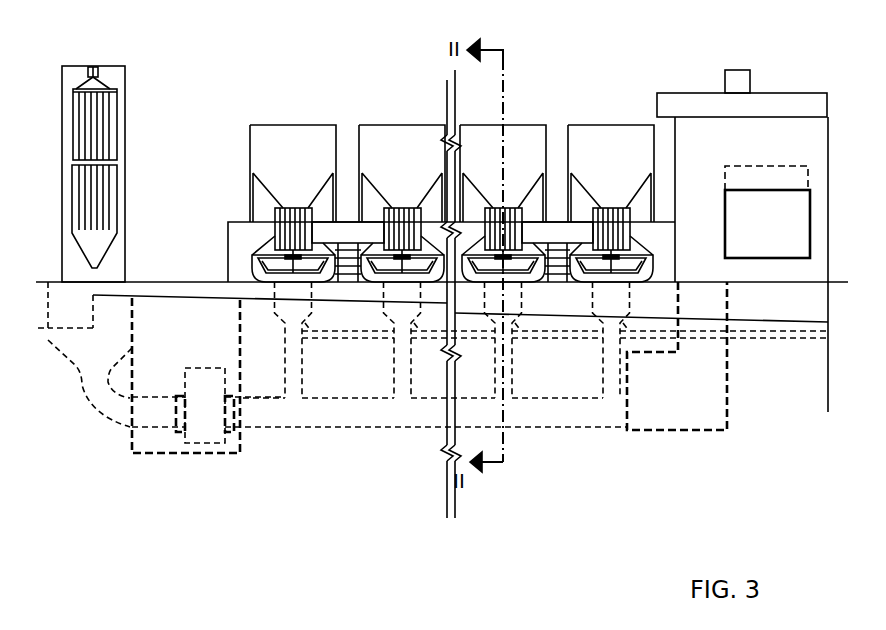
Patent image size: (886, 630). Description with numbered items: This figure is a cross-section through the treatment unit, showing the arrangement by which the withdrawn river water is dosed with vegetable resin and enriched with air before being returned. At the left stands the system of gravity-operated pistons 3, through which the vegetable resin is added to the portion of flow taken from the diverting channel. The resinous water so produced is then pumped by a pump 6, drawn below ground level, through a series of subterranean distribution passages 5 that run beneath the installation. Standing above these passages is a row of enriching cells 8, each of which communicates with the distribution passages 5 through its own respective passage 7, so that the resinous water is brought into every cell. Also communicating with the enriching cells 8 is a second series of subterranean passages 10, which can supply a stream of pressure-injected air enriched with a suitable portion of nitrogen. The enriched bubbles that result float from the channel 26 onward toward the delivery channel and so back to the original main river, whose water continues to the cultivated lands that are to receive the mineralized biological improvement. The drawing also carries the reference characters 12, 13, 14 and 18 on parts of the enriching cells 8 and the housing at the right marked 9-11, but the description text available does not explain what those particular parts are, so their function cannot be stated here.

The gravity-operated pistons 3 is at (93, 182).
The drive motor 12 is at (290, 227).
The connecting block 13 is at (344, 232).
The drive motor of second unit 14 is at (402, 222).
The feed hopper 18 is at (604, 187).
The pump 6 is at (203, 410).
The enriching cells 8 is at (293, 313).
The subterranean distribution passages 5 is at (370, 410).
The passages 7 is at (405, 362).
The subterranean passages 10 is at (538, 337).
The channel 26 is at (582, 295).
The control housing 9-11 is at (776, 227).